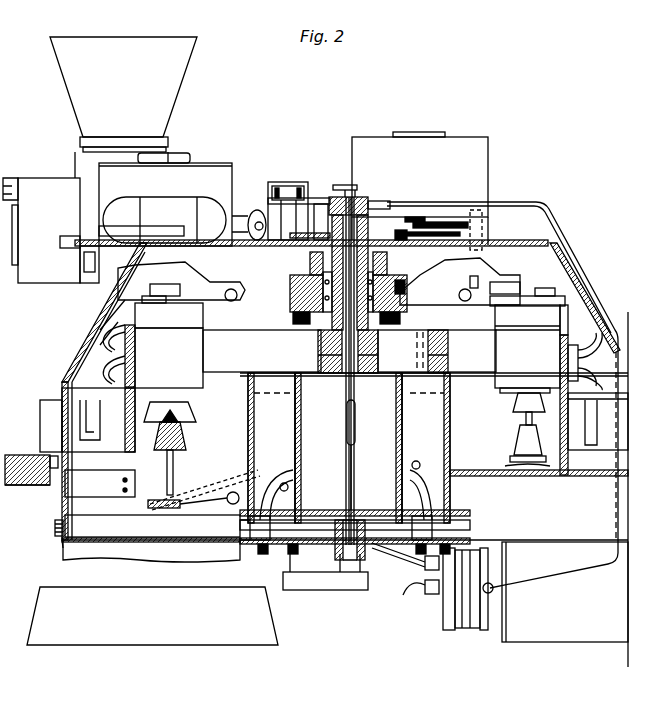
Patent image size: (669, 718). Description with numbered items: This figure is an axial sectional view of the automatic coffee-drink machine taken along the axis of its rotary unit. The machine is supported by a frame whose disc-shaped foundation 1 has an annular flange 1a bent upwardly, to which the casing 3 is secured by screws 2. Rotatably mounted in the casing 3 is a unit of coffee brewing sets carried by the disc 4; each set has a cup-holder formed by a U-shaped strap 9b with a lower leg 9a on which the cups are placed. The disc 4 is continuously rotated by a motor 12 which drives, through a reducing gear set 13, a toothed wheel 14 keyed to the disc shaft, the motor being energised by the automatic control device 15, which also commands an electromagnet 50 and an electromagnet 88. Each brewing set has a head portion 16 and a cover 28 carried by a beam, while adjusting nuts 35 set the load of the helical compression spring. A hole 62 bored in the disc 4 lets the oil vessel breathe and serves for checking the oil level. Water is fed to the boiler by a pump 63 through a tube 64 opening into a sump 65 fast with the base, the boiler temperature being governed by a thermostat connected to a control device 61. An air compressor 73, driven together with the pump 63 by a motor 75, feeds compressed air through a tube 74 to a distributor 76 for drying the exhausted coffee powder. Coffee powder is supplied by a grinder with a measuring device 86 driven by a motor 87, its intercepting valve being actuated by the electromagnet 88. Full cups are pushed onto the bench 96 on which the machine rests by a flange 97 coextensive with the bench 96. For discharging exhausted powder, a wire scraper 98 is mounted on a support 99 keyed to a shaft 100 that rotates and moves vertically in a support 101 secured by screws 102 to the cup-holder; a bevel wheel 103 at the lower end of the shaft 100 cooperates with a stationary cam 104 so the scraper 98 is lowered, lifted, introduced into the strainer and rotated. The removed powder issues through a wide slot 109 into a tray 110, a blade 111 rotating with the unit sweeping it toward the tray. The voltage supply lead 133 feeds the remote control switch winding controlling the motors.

The disc-shaped foundation 1 is at (208, 545).
The annular flange 1a is at (62, 541).
The screws 2 is at (54, 527).
The casing 3 is at (70, 360).
The disc 4 is at (483, 362).
The lower leg 9a is at (586, 458).
The U-shaped strap 9b is at (548, 468).
The motor 12 is at (450, 146).
The reducing gear set 13 is at (452, 240).
The toothed wheel 14 is at (318, 204).
The automatic control device 15 is at (42, 185).
The head portion 16 is at (164, 356).
The cover 28 is at (169, 312).
The adjusting nuts 35 is at (407, 238).
The electromagnet 50 is at (290, 183).
The control device 61 is at (289, 592).
The hole 62 is at (424, 393).
The pump 63 is at (455, 612).
The tube 64 is at (394, 556).
The sump 65 is at (348, 562).
The air compressor 73 is at (485, 628).
The tube 74 is at (563, 250).
The motor 75 is at (534, 642).
The distributor 76 is at (368, 200).
The measuring device 86 is at (220, 170).
The motor 87 is at (168, 148).
The electromagnet 88 is at (254, 210).
The bench 96 is at (17, 482).
The flange 97 is at (48, 455).
The scraper 98 is at (200, 414).
The support 99 is at (190, 442).
The shaft 100 is at (175, 488).
The support 101 is at (180, 458).
The screws 102 is at (90, 470).
The bevel wheel 103 is at (180, 508).
The stationary cam 104 is at (256, 470).
The slot 109 is at (80, 548).
The tray 110 is at (157, 645).
The blade 111 is at (110, 540).
The voltage supply lead 133 is at (452, 220).